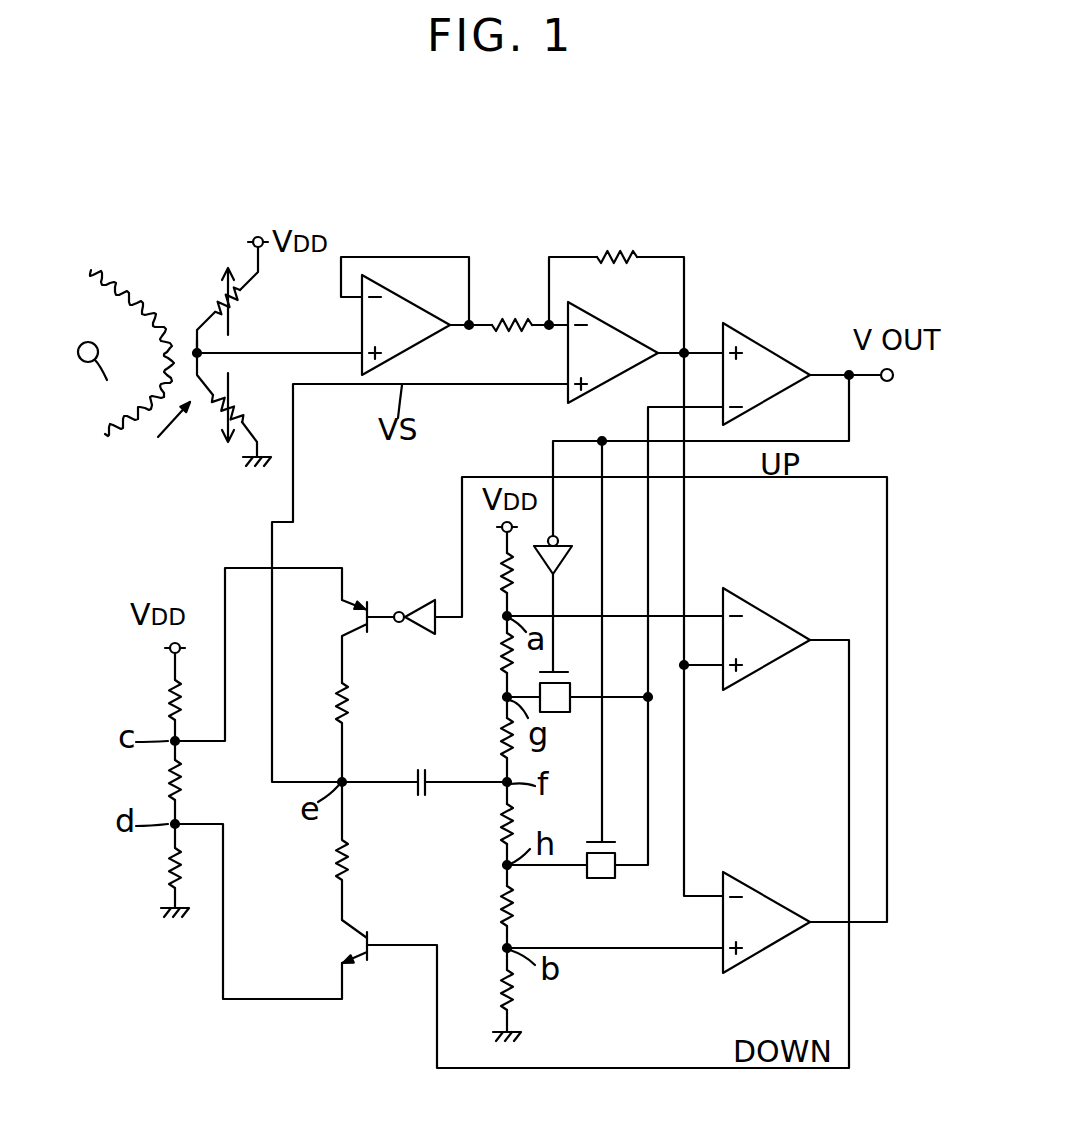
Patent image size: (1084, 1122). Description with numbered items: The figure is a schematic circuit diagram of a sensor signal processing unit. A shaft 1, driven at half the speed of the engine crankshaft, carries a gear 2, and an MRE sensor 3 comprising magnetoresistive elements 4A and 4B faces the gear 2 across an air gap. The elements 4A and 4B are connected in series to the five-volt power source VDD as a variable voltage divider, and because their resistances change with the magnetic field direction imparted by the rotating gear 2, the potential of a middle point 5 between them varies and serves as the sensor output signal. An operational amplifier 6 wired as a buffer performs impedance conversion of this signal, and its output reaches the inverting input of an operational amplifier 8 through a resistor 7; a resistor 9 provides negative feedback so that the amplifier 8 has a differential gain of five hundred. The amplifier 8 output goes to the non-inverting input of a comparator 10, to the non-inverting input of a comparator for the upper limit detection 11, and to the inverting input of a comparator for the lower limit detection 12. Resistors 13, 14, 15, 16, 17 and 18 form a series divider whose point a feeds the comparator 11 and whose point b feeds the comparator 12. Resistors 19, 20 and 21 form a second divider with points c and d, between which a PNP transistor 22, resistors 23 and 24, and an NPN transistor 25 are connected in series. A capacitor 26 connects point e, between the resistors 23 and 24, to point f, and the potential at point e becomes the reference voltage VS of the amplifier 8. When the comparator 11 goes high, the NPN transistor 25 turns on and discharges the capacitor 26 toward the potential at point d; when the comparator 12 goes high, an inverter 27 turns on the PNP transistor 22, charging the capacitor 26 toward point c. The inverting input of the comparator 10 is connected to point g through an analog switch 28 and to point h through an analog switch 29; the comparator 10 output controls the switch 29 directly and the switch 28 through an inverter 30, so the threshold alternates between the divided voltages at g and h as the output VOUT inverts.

The shaft 1 is at (107, 372).
The gear 2 is at (110, 430).
The MRE sensor 3 is at (166, 430).
The magnetoresistive element 4A is at (226, 300).
The magnetoresistive element 4B is at (215, 403).
The middle point 5 is at (196, 352).
The operational amplifier 6 is at (405, 352).
The resistor 7 is at (503, 318).
The operational amplifier 8 is at (596, 388).
The resistor 9 is at (620, 258).
The comparator 10 is at (785, 361).
The comparator for the upper limit detection 11 is at (778, 660).
The comparator for the lower limit detection 12 is at (776, 944).
The resistor 13 is at (500, 574).
The resistor 14 is at (497, 660).
The resistor 15 is at (497, 745).
The resistor 16 is at (497, 824).
The resistor 17 is at (497, 908).
The resistor 18 is at (512, 1002).
The resistor 19 is at (164, 695).
The resistor 20 is at (164, 782).
The resistor 21 is at (164, 866).
The PNP transistor 22 is at (360, 600).
The resistor 23 is at (352, 708).
The resistor 24 is at (352, 876).
The NPN transistor 25 is at (358, 968).
The capacitor 26 is at (413, 800).
The inverter 27 is at (422, 603).
The analog switch 28 is at (560, 714).
The analog switch 29 is at (602, 880).
The inverter 30 is at (565, 556).